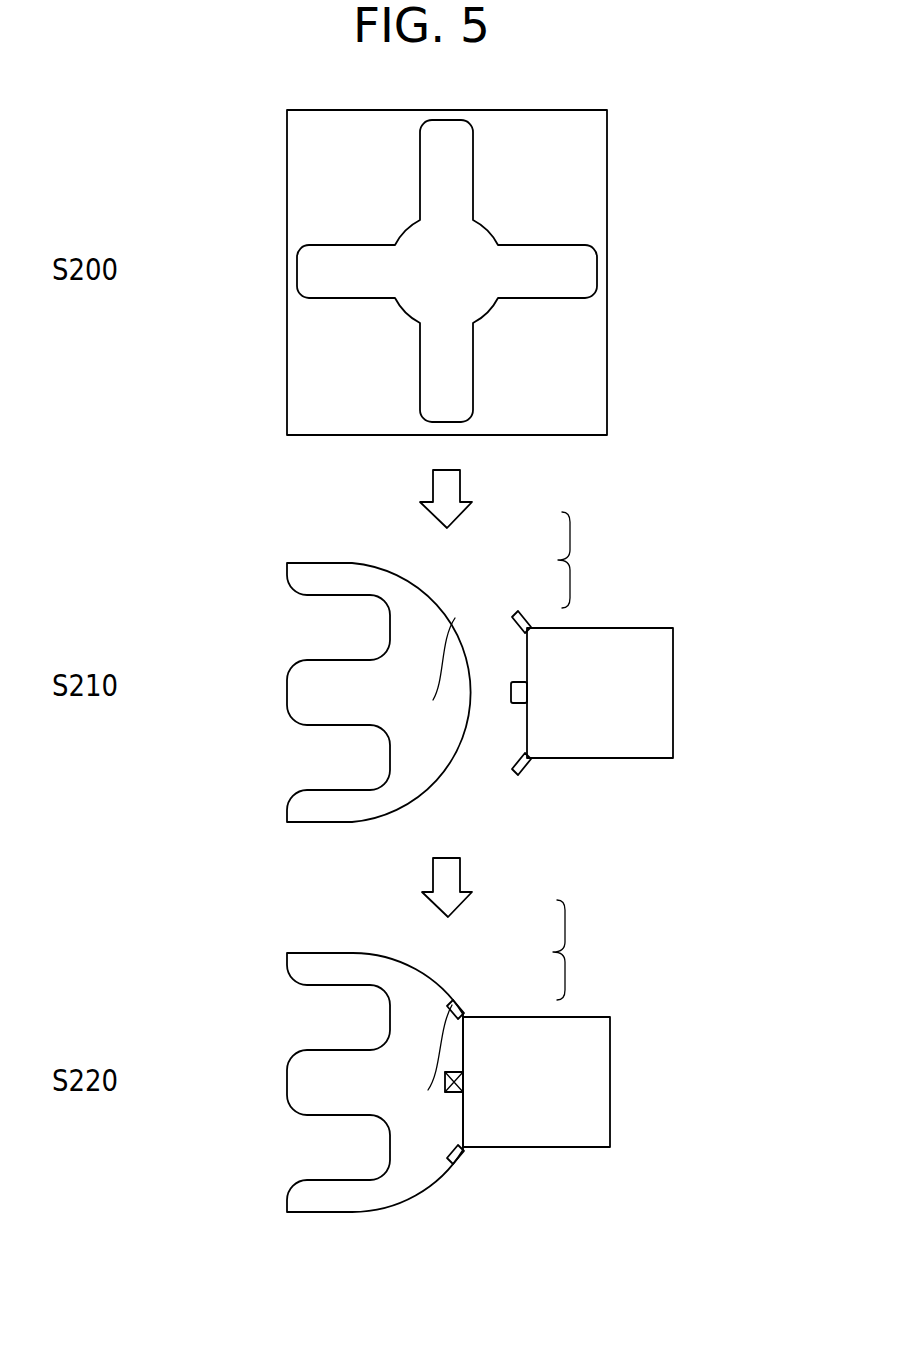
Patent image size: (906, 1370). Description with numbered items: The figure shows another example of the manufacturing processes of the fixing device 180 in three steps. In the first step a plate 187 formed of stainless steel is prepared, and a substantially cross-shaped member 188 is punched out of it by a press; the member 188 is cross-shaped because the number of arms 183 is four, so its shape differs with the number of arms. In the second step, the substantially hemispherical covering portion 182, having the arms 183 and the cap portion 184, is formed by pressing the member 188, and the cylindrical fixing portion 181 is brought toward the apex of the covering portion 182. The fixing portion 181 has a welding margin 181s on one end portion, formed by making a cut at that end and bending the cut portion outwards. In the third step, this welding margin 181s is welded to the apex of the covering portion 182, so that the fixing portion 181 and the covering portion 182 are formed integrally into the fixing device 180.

The fixing device 180 is at (665, 998).
The fixing portion 181 is at (673, 697).
The welding margin 181s is at (520, 618).
The covering portion 182 is at (589, 756).
The arms 183 is at (340, 693).
The cap portion 184 is at (455, 618).
The plate 187 is at (580, 108).
The member 188 is at (490, 223).